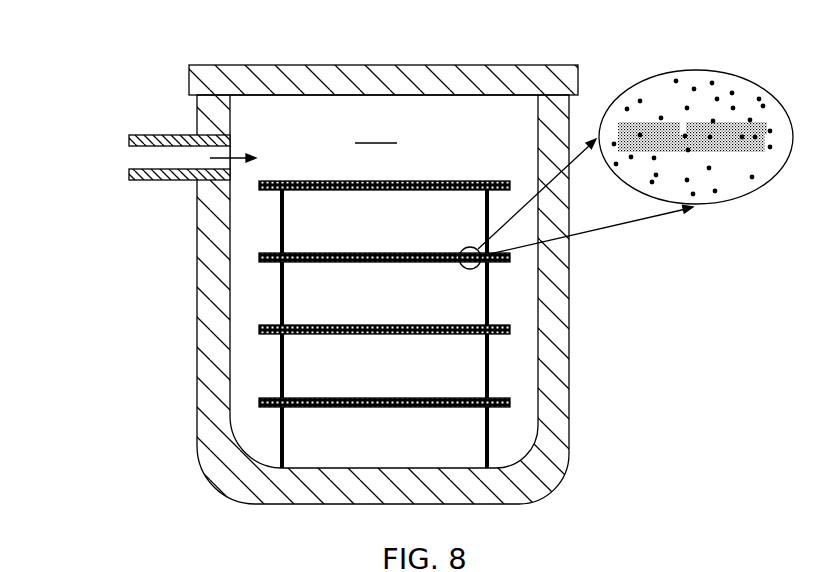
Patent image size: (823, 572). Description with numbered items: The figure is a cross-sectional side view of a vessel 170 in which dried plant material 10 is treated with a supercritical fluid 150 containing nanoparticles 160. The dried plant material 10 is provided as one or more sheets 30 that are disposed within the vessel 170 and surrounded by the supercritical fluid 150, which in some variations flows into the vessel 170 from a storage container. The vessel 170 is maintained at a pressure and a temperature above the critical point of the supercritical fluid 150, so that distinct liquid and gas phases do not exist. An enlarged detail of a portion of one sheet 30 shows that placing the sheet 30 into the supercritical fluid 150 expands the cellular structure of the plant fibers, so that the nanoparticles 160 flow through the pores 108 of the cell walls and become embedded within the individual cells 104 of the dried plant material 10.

The vessel 170 is at (298, 64).
The supercritical fluid 150 is at (114, 159).
The dried plant material 10 is at (378, 325).
The sheet 30 is at (404, 191).
The cell 104 is at (670, 114).
The pore 108 is at (680, 152).
The nanoparticles 160 is at (720, 152).